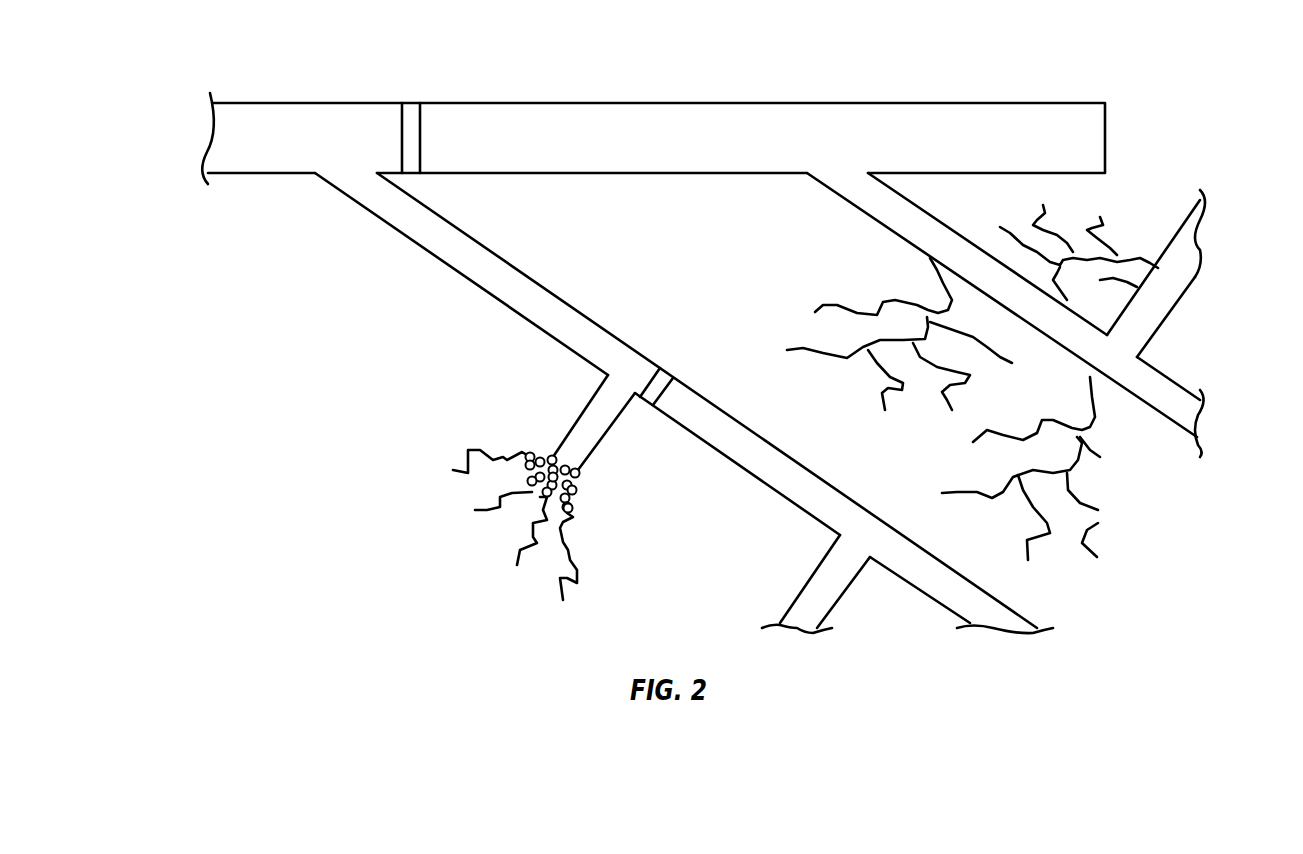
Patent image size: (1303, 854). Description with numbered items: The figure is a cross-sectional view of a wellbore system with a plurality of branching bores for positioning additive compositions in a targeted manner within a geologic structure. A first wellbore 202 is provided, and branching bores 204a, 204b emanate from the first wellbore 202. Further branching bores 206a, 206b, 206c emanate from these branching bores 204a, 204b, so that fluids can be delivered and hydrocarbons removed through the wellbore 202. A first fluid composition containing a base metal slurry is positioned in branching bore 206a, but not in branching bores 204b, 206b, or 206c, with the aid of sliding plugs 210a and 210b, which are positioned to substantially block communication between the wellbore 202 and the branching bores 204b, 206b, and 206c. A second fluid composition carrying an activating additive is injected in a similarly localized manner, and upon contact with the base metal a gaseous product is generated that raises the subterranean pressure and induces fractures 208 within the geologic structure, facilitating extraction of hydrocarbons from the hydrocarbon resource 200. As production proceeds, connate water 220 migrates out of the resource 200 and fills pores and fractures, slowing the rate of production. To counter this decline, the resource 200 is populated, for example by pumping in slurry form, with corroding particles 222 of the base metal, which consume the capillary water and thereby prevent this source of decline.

The hydrocarbon resource 200 is at (345, 556).
The first wellbore 202 is at (237, 137).
The branching bore 204a is at (398, 233).
The branching bore 204b is at (857, 210).
The branching bore 206a is at (587, 410).
The branching bore 206b is at (818, 568).
The branching bore 206c is at (1160, 323).
The fractures 208 is at (511, 565).
The sliding plug 210a is at (405, 100).
The sliding plug 210b is at (672, 365).
The connate water 220 is at (580, 508).
The corroding particles 222 is at (550, 464).